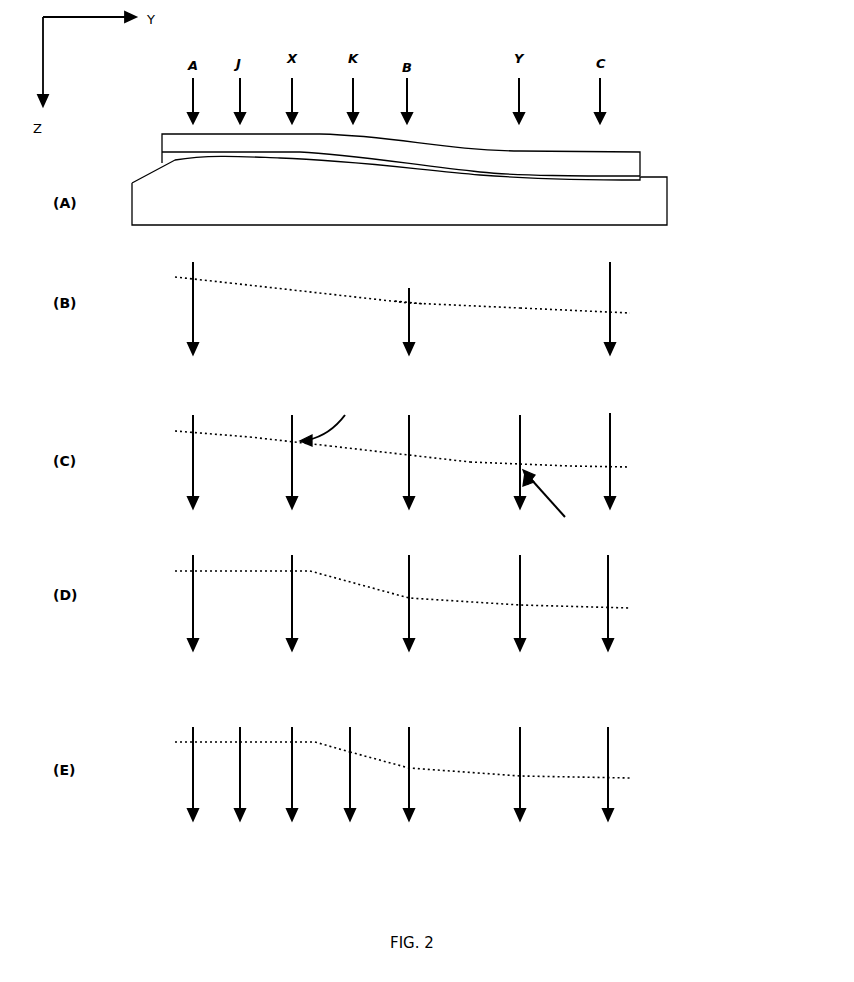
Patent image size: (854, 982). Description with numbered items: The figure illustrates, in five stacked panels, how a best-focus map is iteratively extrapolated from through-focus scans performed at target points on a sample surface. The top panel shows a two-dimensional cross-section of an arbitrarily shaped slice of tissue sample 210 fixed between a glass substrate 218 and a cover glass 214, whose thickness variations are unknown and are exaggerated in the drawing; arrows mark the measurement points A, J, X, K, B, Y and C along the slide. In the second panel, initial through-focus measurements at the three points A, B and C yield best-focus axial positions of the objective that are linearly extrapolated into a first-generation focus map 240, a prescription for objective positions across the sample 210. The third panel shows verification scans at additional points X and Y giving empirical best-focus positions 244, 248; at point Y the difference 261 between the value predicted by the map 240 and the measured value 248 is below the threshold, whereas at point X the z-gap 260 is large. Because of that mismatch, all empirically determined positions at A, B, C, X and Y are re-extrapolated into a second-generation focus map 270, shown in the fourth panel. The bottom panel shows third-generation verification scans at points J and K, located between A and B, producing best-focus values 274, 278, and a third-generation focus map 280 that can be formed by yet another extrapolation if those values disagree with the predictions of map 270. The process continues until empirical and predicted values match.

The tissue sample 210 is at (160, 163).
The cover glass 214 is at (641, 163).
The glass substrate 218 is at (668, 202).
The first-generation focus map 240 is at (475, 303).
The best-focus position at point X 244 is at (276, 432).
The best-focus position at point Y 248 is at (530, 463).
The z-gap 260 is at (326, 418).
The difference at point Y 261 is at (553, 506).
The second-generation focus map 270 is at (325, 580).
The best-focus z-position at point J 274 is at (248, 735).
The best-focus z-position at point K 278 is at (372, 755).
The third-generation focus map 280 is at (318, 742).